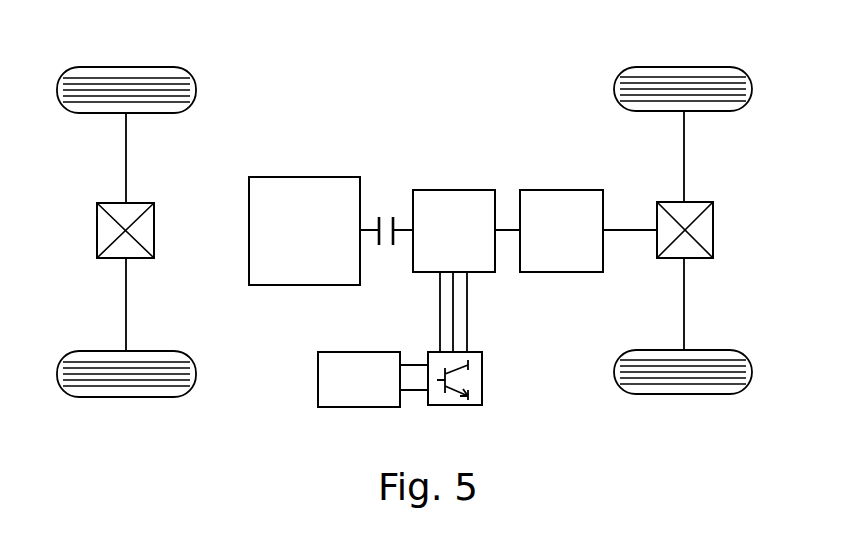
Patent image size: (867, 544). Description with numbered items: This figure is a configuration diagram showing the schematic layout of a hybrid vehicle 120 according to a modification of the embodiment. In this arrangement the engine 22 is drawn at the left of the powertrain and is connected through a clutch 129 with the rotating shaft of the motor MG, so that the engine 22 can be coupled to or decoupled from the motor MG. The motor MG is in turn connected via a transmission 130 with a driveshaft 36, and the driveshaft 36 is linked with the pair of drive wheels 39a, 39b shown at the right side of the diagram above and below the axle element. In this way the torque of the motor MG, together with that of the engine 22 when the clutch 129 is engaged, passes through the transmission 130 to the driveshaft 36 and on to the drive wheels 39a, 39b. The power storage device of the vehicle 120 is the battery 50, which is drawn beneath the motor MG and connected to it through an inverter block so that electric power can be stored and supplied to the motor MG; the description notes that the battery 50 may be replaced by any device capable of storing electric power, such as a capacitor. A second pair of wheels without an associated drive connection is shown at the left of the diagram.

The hybrid vehicle 120 is at (542, 56).
The engine 22 is at (305, 174).
The clutch 129 is at (386, 216).
The motor MG is at (454, 187).
The transmission 130 is at (563, 187).
The driveshaft 36 is at (631, 226).
The drive wheel 39a is at (684, 66).
The drive wheel 39b is at (684, 395).
The battery 50 is at (360, 350).